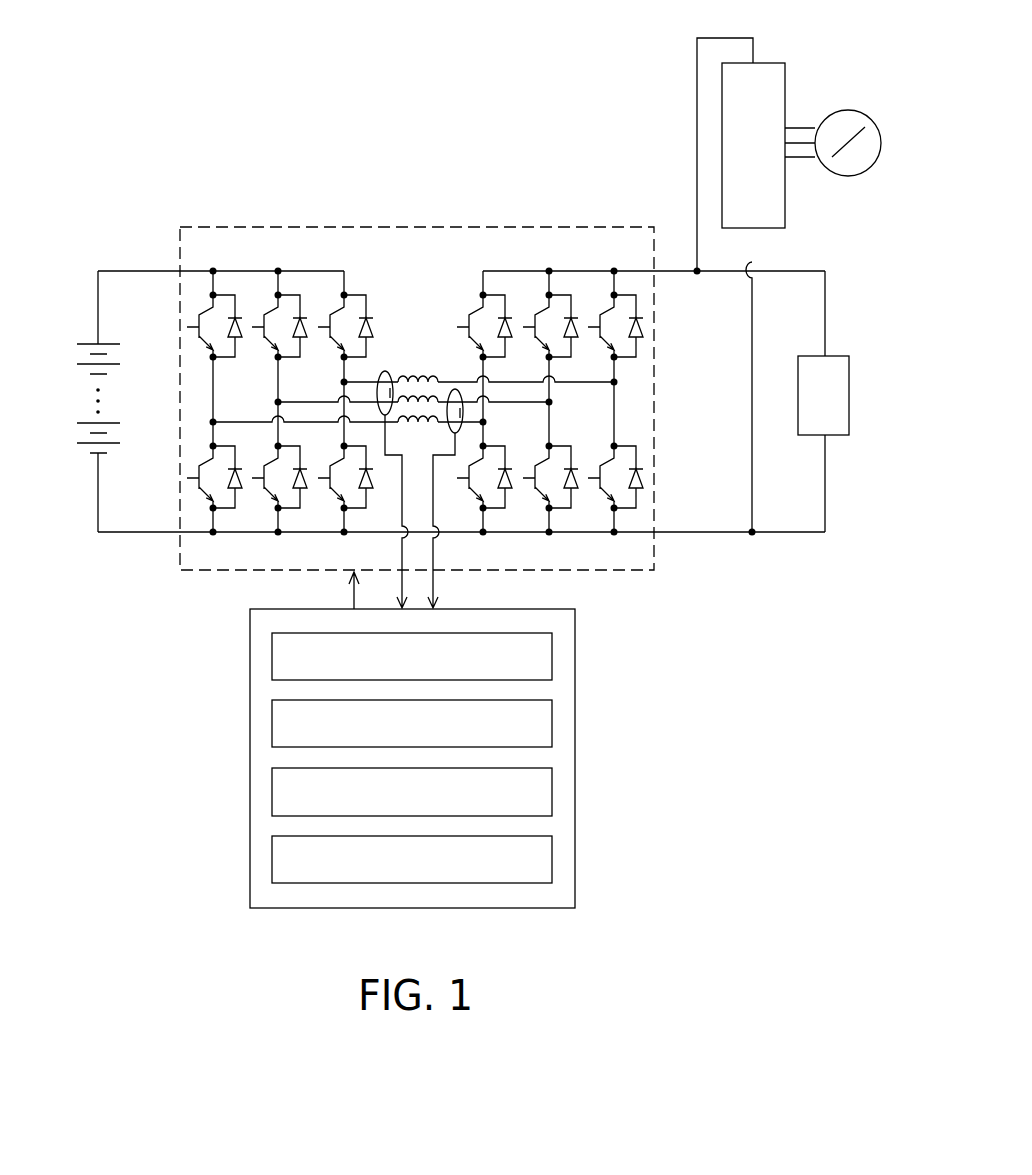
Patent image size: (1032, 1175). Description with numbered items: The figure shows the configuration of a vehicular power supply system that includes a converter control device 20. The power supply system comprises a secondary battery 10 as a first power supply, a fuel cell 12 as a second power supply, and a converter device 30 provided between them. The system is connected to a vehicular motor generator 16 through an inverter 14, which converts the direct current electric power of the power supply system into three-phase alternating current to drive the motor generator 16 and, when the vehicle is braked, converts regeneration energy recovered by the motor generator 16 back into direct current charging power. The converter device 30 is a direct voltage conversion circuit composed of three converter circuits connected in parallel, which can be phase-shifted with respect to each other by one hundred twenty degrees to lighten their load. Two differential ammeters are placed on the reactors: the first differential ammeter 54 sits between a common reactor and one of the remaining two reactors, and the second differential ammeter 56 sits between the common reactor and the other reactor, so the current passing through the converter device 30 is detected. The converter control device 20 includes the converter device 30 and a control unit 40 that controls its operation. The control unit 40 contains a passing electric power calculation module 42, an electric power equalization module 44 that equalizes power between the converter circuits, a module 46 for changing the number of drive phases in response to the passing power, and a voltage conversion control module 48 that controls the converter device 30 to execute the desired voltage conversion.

The secondary battery 10 is at (85, 400).
The fuel cell 12 is at (837, 437).
The inverter 14 is at (787, 72).
The motor generator 16 is at (857, 177).
The converter control device 20 is at (166, 648).
The converter device 30 is at (178, 555).
The control unit 40 is at (250, 753).
The passing electric power calculation module 42 is at (552, 655).
The electric power equalization module 44 is at (552, 724).
The module for changing the number of drive phases 46 is at (552, 793).
The voltage conversion control module 48 is at (552, 858).
The first differential ammeter 54 is at (383, 372).
The second differential ammeter 56 is at (452, 390).